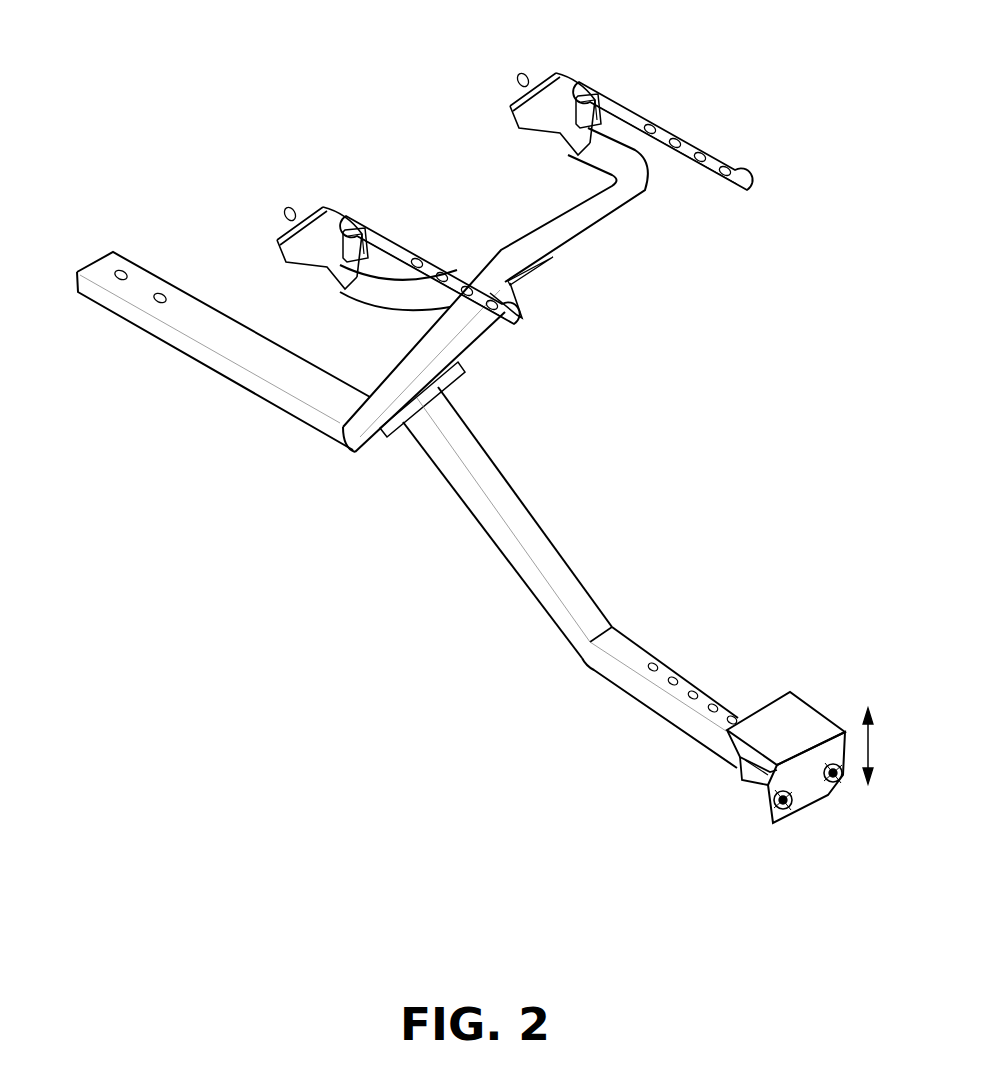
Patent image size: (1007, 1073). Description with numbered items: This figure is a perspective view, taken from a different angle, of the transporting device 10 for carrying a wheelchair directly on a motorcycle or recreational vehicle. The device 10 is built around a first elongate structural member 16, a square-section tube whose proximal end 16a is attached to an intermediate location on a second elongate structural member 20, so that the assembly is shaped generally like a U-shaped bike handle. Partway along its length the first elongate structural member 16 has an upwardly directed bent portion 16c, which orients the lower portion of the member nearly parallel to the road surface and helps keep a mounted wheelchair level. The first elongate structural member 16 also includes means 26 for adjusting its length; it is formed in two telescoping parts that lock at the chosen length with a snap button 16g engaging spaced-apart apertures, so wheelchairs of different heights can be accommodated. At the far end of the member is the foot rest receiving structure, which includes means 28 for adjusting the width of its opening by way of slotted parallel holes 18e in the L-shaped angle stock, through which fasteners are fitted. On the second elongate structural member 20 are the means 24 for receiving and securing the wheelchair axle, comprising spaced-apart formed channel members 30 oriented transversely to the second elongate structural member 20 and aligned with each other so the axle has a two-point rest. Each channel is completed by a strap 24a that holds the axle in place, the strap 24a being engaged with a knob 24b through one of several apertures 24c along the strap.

The transporting device 10 is at (253, 78).
The first elongate structural member 16 is at (607, 543).
The proximal end 16a is at (448, 424).
The upwardly directed bent portion 16c is at (578, 602).
The snap button 16g is at (653, 663).
The slotted parallel holes 18e is at (793, 783).
The second elongate structural member 20 is at (367, 360).
The means for receiving and securing the axle 24 is at (343, 197).
The straps 24a is at (630, 113).
The knobs 24b is at (92, 291).
The apertures 24c is at (679, 140).
The means for adjusting a length of the member 26 is at (652, 743).
The means for adjusting a width 28 is at (743, 808).
The formed channel members 30 is at (533, 127).